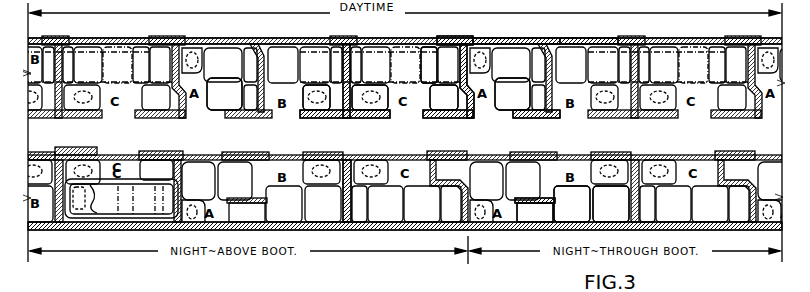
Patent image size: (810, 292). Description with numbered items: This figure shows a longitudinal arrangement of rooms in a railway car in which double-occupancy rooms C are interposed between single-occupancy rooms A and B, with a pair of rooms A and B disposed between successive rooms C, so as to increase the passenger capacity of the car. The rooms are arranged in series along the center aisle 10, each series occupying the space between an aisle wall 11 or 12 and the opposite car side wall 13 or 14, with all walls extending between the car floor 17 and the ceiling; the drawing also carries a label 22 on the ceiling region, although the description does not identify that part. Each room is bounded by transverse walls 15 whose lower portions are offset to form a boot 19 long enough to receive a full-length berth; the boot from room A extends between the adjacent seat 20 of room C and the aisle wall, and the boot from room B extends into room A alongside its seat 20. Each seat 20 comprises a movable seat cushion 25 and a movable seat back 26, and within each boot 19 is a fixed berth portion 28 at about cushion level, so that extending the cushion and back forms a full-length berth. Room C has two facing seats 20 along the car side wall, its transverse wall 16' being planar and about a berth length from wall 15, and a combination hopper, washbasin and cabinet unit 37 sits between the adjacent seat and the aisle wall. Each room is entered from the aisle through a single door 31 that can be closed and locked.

The center aisle 10 is at (500, 146).
The aisle wall 11 is at (436, 112).
The aisle wall 12 is at (331, 134).
The car side wall 13 is at (463, 44).
The car side wall 14 is at (340, 227).
The transverse wall 15 is at (466, 86).
The transverse wall 16' is at (368, 122).
The car floor 17 is at (372, 108).
The boot 19 is at (443, 114).
The seat 20 is at (430, 57).
The ceiling panel 22 is at (524, 40).
The seat cushion 25 is at (583, 223).
The seat back 26 is at (623, 223).
The fixed berth portion 28 is at (544, 223).
The door 31 is at (553, 119).
The combination hopper, washbasin and cabinet unit 37 is at (325, 111).